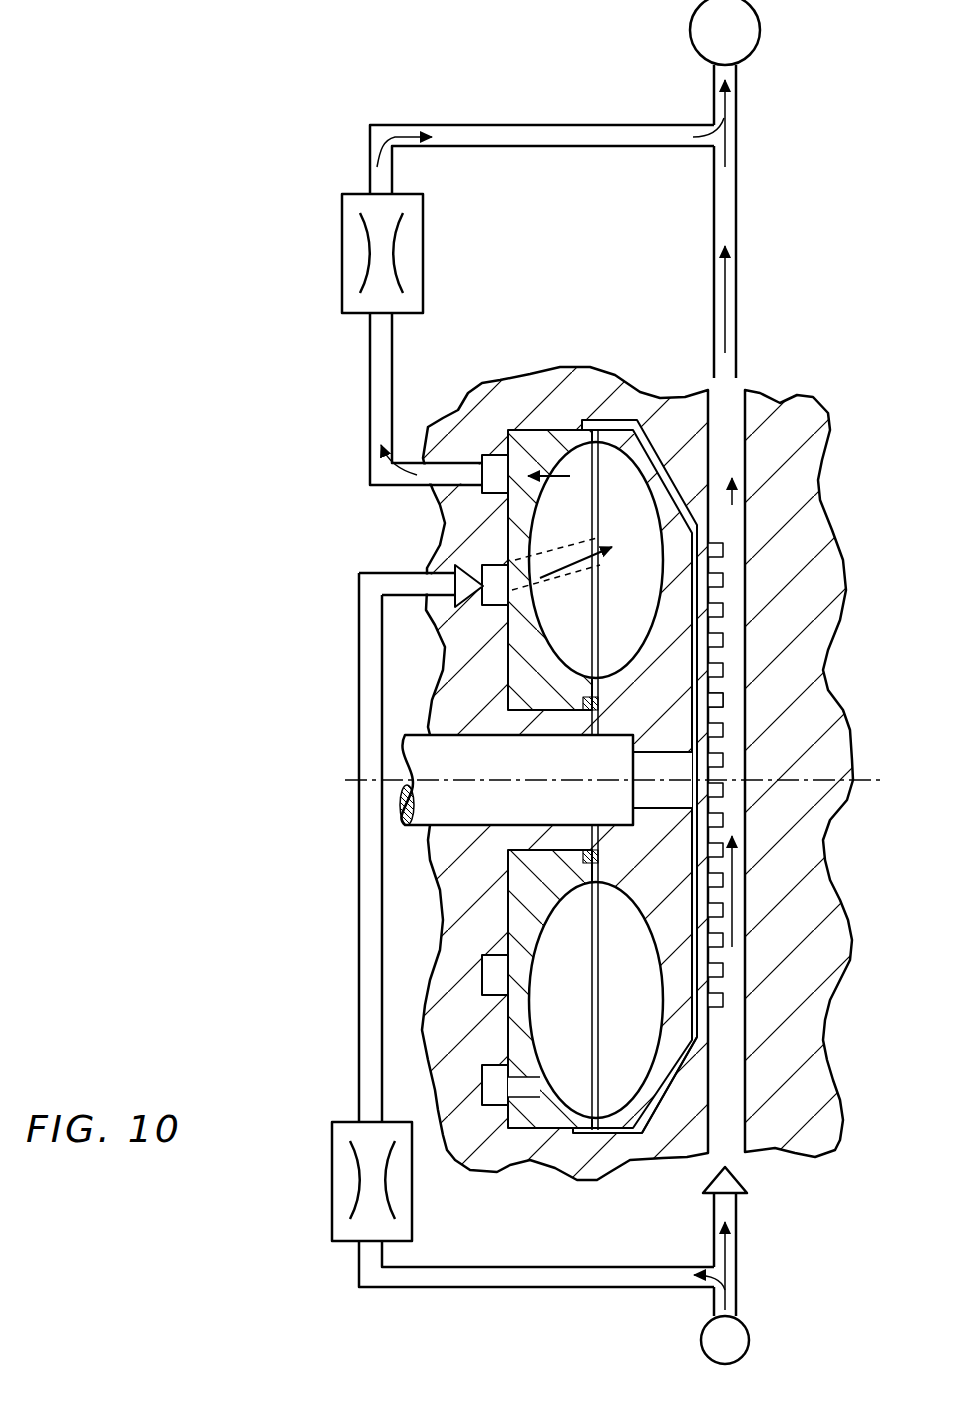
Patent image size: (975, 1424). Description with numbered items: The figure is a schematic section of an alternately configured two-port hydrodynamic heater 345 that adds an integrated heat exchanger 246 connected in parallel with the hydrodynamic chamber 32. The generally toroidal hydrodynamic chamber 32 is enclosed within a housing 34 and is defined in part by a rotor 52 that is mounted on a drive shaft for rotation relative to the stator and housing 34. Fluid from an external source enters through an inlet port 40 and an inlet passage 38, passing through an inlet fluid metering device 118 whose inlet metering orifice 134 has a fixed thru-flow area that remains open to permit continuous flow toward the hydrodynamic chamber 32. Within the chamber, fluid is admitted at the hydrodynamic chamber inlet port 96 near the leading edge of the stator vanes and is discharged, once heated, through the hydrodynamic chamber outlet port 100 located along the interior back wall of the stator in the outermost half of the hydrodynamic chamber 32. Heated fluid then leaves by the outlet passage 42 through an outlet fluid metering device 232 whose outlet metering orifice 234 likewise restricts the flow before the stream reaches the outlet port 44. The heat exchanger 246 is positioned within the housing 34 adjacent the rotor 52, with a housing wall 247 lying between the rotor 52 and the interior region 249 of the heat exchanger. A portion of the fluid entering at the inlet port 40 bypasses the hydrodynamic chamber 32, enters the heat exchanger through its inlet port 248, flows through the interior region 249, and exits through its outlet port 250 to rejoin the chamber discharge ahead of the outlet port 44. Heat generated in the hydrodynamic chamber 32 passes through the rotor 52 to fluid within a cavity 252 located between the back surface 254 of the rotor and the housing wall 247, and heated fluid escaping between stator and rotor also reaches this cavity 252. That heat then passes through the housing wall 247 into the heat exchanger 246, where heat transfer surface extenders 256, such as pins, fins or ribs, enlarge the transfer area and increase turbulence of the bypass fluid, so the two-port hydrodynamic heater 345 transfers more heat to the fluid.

The hydrodynamic chamber 32 is at (648, 656).
The housing 34 is at (835, 398).
The inlet passage 38 is at (357, 975).
The inlet port 40 is at (751, 1342).
The outlet passage 42 is at (598, 108).
The outlet port 44 is at (762, 34).
The rotor 52 is at (692, 893).
The hydrodynamic chamber inlet port 96 is at (602, 545).
The hydrodynamic chamber outlet port 100 is at (555, 468).
The inlet fluid metering device 118 is at (412, 1210).
The inlet metering orifice 134 is at (372, 1205).
The outlet fluid metering device 232 is at (425, 238).
The outlet metering orifice 234 is at (393, 278).
The heat exchanger 246 is at (748, 590).
The housing wall 247 is at (730, 628).
The inlet port 248 is at (730, 1158).
The interior region 249 is at (735, 805).
The outlet port 250 is at (733, 395).
The cavity 252 is at (682, 1057).
The back surface 254 is at (694, 957).
The heat transfer surface extender 256 is at (723, 702).
The two-port hydrodynamic heater 345 is at (830, 288).